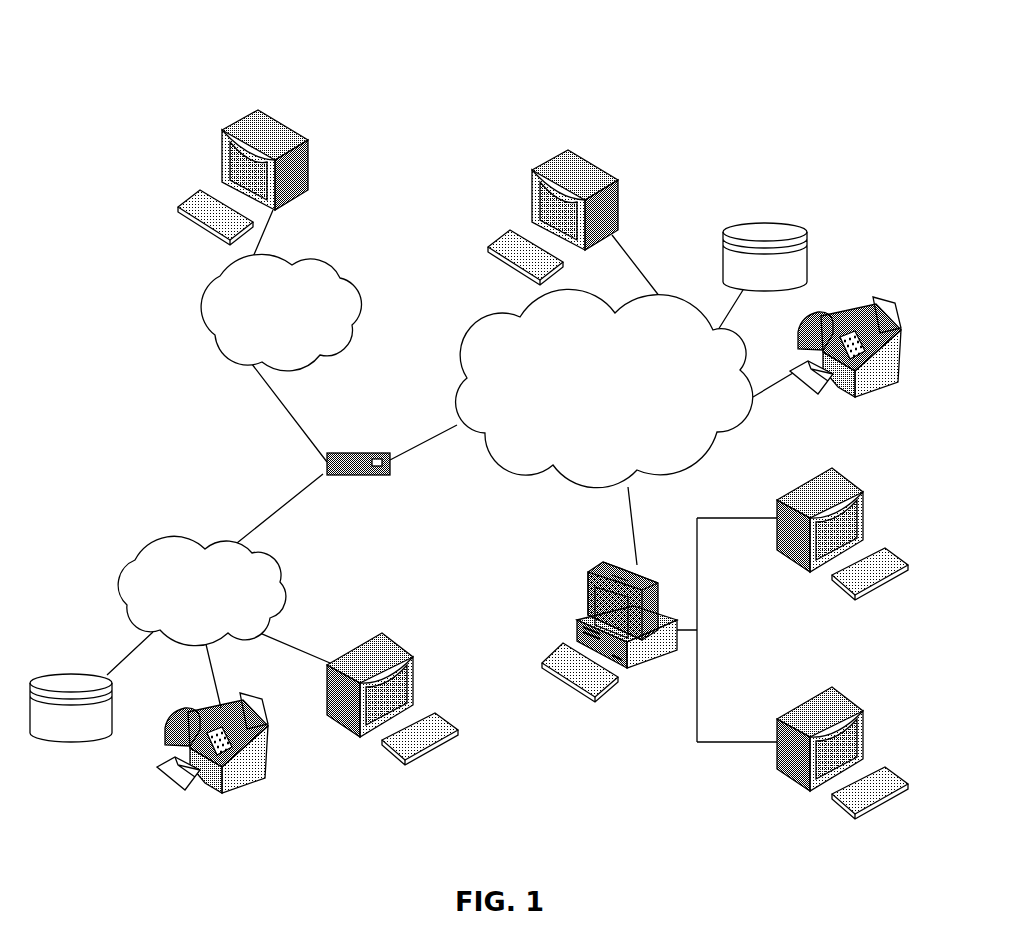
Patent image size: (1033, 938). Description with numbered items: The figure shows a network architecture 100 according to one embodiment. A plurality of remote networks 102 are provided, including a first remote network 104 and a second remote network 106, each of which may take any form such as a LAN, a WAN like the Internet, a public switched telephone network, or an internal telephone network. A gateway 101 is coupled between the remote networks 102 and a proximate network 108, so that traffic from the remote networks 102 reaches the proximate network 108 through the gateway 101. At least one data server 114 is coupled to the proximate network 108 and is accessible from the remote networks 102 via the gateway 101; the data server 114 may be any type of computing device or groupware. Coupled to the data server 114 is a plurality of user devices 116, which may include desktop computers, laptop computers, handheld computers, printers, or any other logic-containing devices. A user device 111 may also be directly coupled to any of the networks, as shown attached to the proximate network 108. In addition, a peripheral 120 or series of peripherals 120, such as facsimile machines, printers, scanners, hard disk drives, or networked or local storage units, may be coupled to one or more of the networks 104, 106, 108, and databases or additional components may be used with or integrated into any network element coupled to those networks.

The network architecture 100 is at (148, 90).
The gateway 101 is at (342, 452).
The remote networks 102 is at (180, 377).
The first remote network 104 is at (131, 561).
The second remote network 106 is at (352, 286).
The proximate network 108 is at (713, 452).
The user device 111 is at (617, 185).
The data server 114 is at (588, 584).
The user devices 116 is at (308, 151).
The peripheral 120 is at (806, 232).